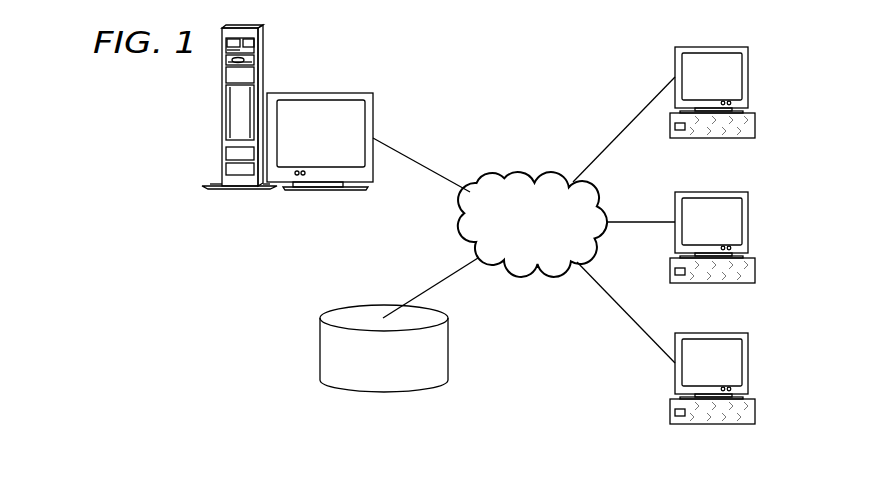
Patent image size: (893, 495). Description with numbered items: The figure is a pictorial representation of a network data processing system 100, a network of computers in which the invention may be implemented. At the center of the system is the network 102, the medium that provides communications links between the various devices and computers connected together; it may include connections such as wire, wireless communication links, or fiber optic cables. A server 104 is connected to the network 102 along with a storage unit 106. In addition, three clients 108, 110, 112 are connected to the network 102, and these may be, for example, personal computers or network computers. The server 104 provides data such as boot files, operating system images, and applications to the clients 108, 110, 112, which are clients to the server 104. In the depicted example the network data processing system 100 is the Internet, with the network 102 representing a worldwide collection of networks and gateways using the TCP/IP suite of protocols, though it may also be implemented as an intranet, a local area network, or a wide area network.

The network data processing system 100 is at (584, 55).
The network 102 is at (504, 173).
The server 104 is at (220, 108).
The storage unit 106 is at (367, 393).
The client 108 is at (748, 77).
The client 110 is at (748, 222).
The client 112 is at (748, 363).